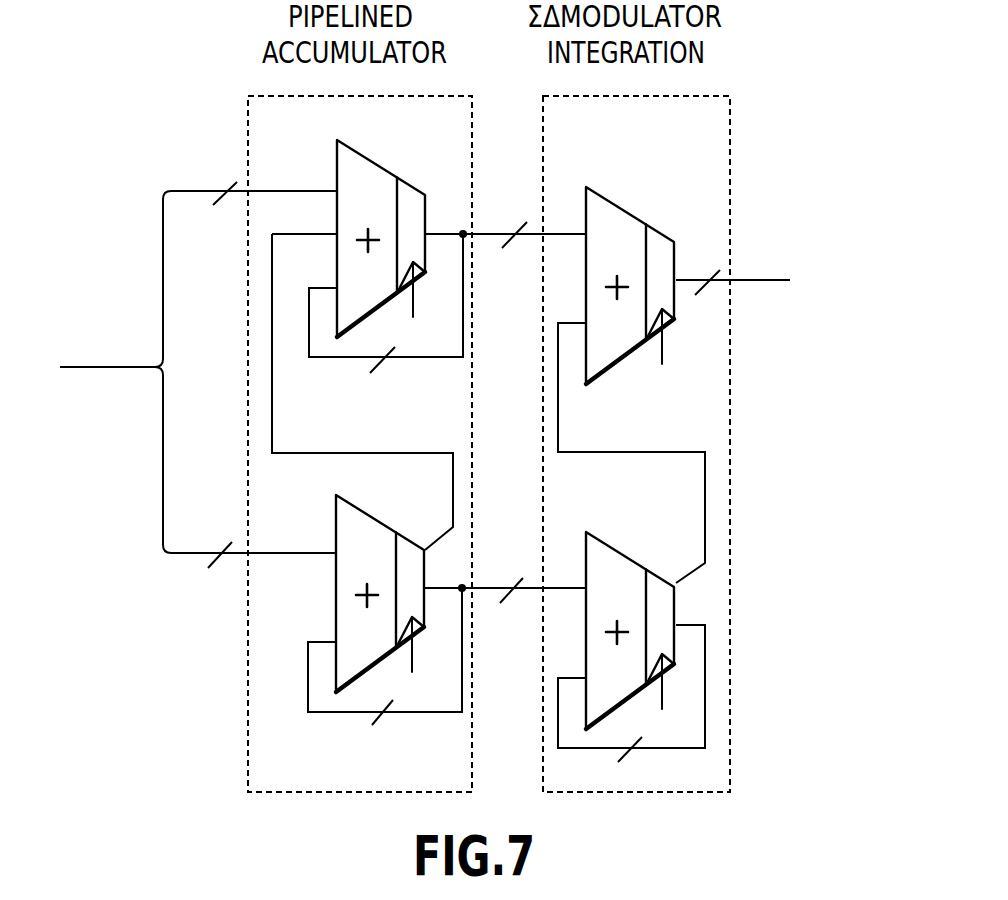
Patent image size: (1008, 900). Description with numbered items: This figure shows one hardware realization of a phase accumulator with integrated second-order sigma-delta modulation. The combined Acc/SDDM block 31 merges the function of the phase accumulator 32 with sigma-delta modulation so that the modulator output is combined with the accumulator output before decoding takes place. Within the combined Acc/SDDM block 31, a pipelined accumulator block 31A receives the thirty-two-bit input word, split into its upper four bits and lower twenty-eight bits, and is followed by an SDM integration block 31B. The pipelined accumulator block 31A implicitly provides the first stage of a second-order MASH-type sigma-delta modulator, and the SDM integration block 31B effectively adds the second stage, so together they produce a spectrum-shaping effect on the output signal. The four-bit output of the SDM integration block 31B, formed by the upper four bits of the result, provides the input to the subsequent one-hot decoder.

The combined Acc/SDDM block 31 is at (837, 508).
The pipelined accumulator block 31A is at (247, 700).
The SDM integration block 31B is at (730, 427).
The phase accumulator 32 is at (87, 380).